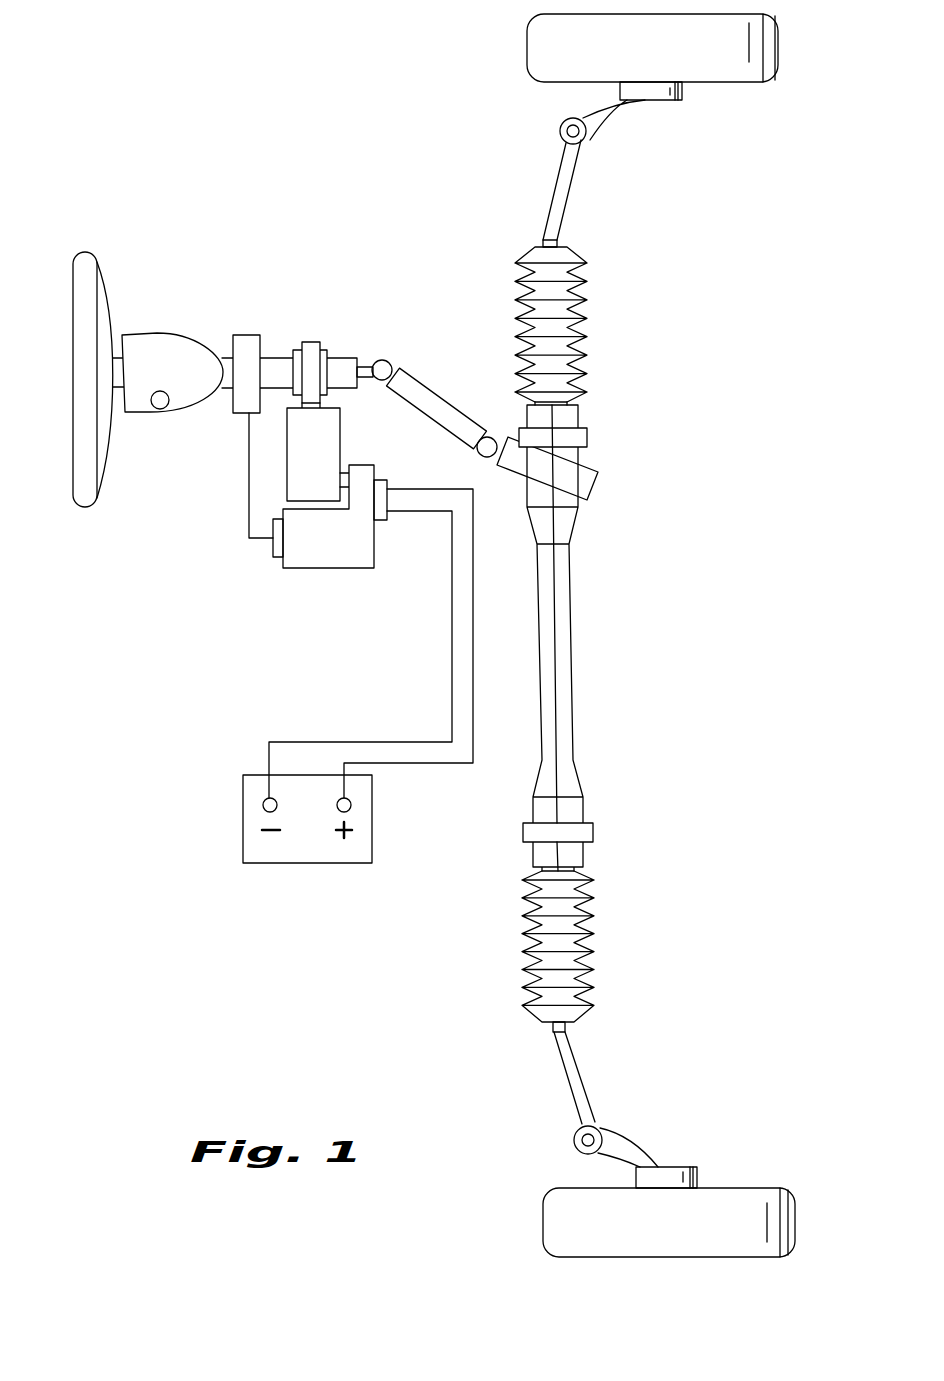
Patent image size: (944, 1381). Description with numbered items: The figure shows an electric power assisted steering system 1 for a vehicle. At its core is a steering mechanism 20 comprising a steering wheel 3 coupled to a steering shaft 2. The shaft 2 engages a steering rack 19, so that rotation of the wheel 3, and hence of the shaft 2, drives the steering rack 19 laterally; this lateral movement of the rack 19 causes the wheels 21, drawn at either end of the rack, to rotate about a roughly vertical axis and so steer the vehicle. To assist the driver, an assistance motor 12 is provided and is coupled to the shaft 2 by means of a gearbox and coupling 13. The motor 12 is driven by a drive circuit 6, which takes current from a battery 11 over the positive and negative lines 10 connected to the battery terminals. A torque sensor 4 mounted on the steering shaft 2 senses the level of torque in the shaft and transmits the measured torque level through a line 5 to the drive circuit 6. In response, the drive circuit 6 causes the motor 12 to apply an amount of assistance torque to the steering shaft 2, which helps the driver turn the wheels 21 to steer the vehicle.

The steering system 1 is at (352, 187).
The steering shaft 2 is at (224, 356).
The steering wheel 3 is at (107, 302).
The torque sensor 4 is at (247, 338).
The line 5 is at (248, 463).
The drive circuit 6 is at (333, 569).
The positive and negative lines 10 is at (473, 645).
The battery 11 is at (368, 855).
The assistance motor 12 is at (318, 443).
The gearbox and coupling 13 is at (312, 347).
The steering rack 19 is at (583, 489).
The steering mechanism 20 is at (648, 425).
The wheels 21 is at (730, 65).